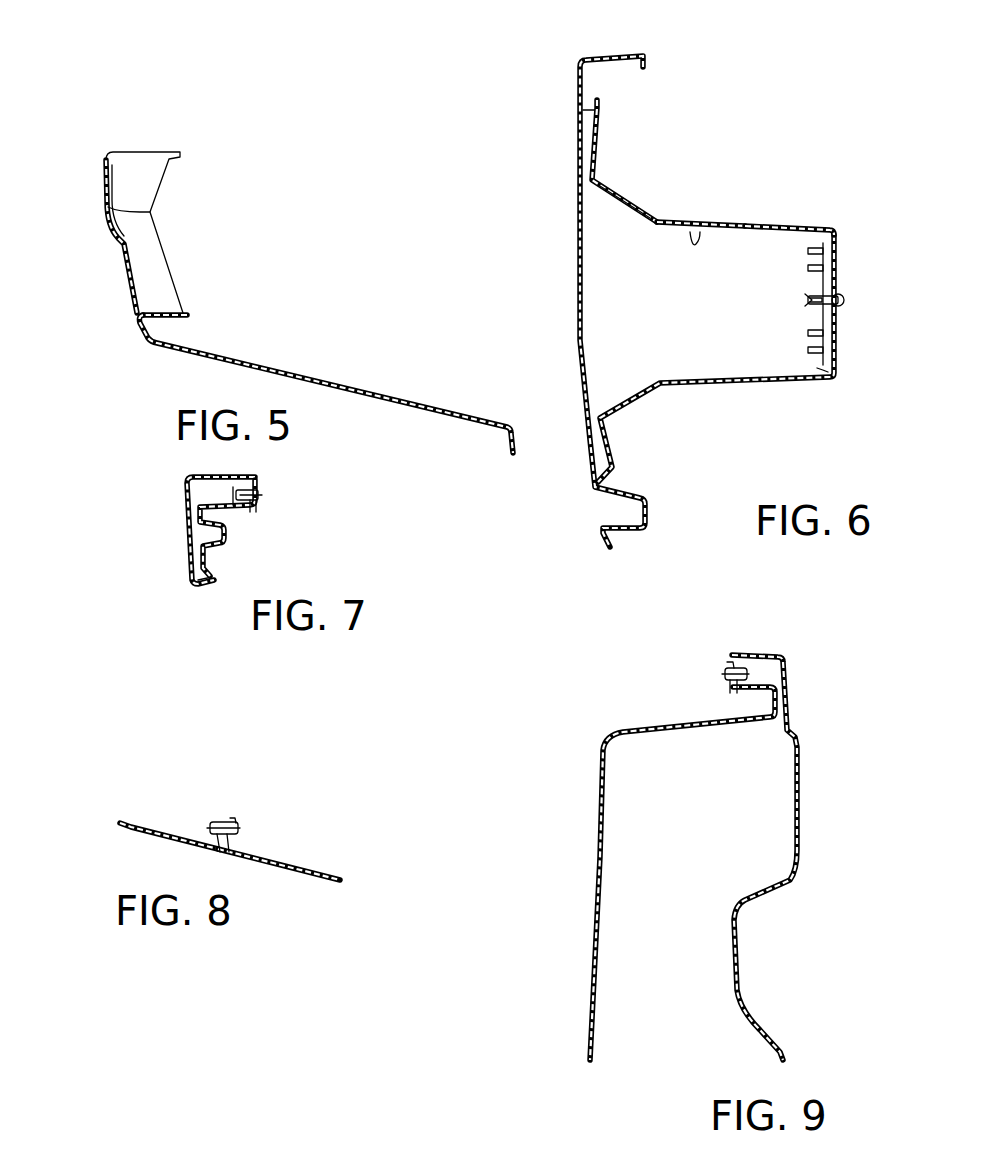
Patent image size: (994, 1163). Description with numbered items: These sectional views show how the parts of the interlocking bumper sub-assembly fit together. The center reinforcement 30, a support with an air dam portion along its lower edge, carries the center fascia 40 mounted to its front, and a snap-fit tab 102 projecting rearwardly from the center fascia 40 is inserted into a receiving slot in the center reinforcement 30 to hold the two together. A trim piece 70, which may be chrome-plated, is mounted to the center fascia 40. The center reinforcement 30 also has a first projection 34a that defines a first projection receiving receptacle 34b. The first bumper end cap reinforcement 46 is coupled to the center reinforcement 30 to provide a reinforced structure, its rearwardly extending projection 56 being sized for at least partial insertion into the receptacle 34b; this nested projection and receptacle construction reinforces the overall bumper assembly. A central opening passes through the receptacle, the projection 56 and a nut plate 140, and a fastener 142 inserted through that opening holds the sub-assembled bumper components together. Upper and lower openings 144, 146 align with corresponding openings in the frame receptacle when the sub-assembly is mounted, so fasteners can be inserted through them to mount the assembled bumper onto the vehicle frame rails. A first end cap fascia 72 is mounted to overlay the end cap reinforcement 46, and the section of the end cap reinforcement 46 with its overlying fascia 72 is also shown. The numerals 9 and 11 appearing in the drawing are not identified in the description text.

In FIG. 7, the clip 9 is at (264, 496).
In FIG. 8, the clip 9 is at (240, 833).
In FIG. 9, the clip 9 is at (728, 676).
In FIG. 6, the fastener 11 is at (812, 301).
In FIG. 5, the center reinforcement 30 is at (347, 384).
In FIG. 6, the center reinforcement 30 is at (604, 180).
In FIG. 7, the center reinforcement 30 is at (230, 540).
In FIG. 8, the center reinforcement 30 is at (122, 819).
In FIG. 6, the first projection 34a is at (777, 222).
In FIG. 6, the first projection receiving receptacle 34b is at (694, 238).
In FIG. 5, the center fascia 40 is at (124, 291).
In FIG. 7, the center fascia 40 is at (214, 578).
In FIG. 6, the first bumper end cap reinforcement 46 is at (645, 224).
In FIG. 9, the first bumper end cap reinforcement 46 is at (590, 850).
In FIG. 6, the rearwardly extending projection 56 is at (733, 233).
In FIG. 7, the trim piece 70 is at (188, 547).
In FIG. 6, the first end cap fascia 72 is at (570, 346).
In FIG. 8, the first end cap fascia 72 is at (312, 879).
In FIG. 9, the first end cap fascia 72 is at (786, 658).
In FIG. 5, the snap-fit tab 102 is at (186, 312).
In FIG. 6, the nut plate 140 is at (826, 377).
In FIG. 6, the fastener 142 is at (845, 300).
In FIG. 6, the upper opening 144 is at (835, 258).
In FIG. 6, the lower opening 146 is at (834, 341).